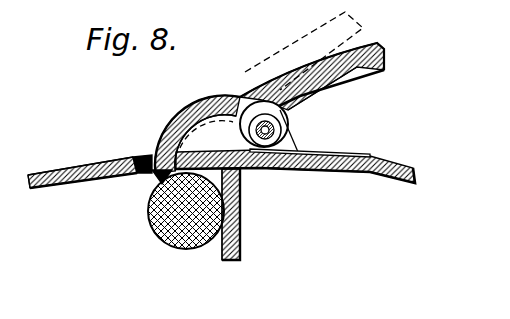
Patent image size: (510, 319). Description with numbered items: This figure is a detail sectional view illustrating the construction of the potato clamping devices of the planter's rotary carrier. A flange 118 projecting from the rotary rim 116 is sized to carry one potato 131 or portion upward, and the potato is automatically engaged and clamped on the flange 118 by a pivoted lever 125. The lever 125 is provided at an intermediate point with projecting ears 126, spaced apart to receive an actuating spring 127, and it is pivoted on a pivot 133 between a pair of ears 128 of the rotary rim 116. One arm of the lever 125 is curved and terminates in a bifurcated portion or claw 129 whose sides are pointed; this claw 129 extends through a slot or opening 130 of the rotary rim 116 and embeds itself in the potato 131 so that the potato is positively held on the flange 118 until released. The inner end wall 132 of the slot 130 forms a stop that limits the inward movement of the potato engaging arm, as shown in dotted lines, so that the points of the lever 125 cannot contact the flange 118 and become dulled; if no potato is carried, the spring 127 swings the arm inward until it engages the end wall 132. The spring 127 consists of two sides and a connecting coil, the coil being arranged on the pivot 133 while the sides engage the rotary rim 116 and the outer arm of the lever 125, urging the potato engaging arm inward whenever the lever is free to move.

The rotary rim 116 is at (420, 165).
The flange 118 is at (241, 227).
The lever 125 is at (232, 96).
The projecting ear 126 is at (287, 111).
The actuating spring 127 is at (282, 133).
The ear of the rotary rim 128 is at (266, 170).
The bifurcated portion or claw 129 is at (151, 196).
The slot or opening 130 is at (146, 160).
The potato 131 is at (154, 228).
The inner end wall of the slot 132 is at (171, 121).
The pivot 133 is at (311, 172).